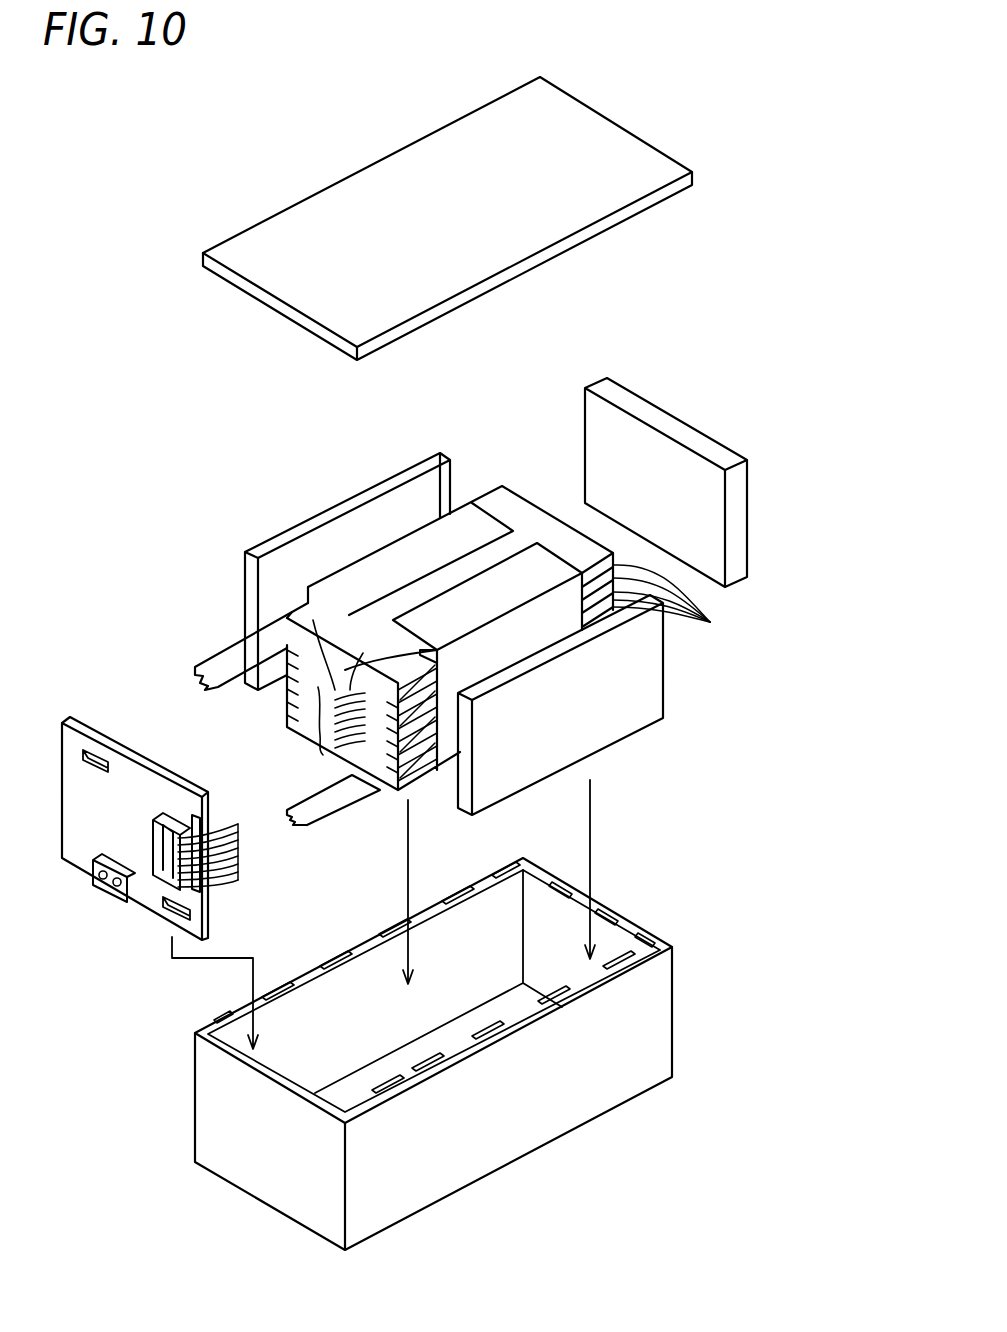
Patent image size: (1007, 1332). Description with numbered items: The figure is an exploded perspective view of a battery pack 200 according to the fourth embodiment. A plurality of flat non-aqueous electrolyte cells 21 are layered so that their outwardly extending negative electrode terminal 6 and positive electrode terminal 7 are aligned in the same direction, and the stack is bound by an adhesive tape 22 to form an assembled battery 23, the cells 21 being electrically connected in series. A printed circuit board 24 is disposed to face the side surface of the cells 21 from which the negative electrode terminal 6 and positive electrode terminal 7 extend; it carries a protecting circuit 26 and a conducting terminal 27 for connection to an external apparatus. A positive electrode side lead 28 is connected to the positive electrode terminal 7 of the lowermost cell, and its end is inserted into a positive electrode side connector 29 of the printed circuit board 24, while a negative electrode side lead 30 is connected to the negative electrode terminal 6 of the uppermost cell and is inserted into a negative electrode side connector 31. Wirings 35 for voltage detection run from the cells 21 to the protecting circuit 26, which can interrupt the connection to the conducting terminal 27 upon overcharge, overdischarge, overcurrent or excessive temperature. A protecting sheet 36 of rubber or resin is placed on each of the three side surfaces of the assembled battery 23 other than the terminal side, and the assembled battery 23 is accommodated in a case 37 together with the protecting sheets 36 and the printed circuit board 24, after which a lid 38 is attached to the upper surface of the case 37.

The battery pack 200 is at (128, 374).
The negative electrode terminal 6 is at (279, 606).
The positive electrode terminal 7 is at (433, 642).
The cells 21 is at (710, 622).
The adhesive tape 22 is at (525, 570).
The assembled battery 23 is at (399, 538).
The printed circuit board 24 is at (97, 712).
The protecting circuit 26 is at (168, 814).
The conducting terminal 27 is at (118, 897).
The positive electrode side lead 28 is at (323, 815).
The positive electrode side connector 29 is at (200, 913).
The negative electrode side lead 30 is at (207, 660).
The negative electrode side connector 31 is at (102, 750).
The wiring for voltage detection 35 is at (302, 723).
The protecting sheet 36 is at (318, 528).
The case 37 is at (660, 1020).
The lid 38 is at (633, 158).